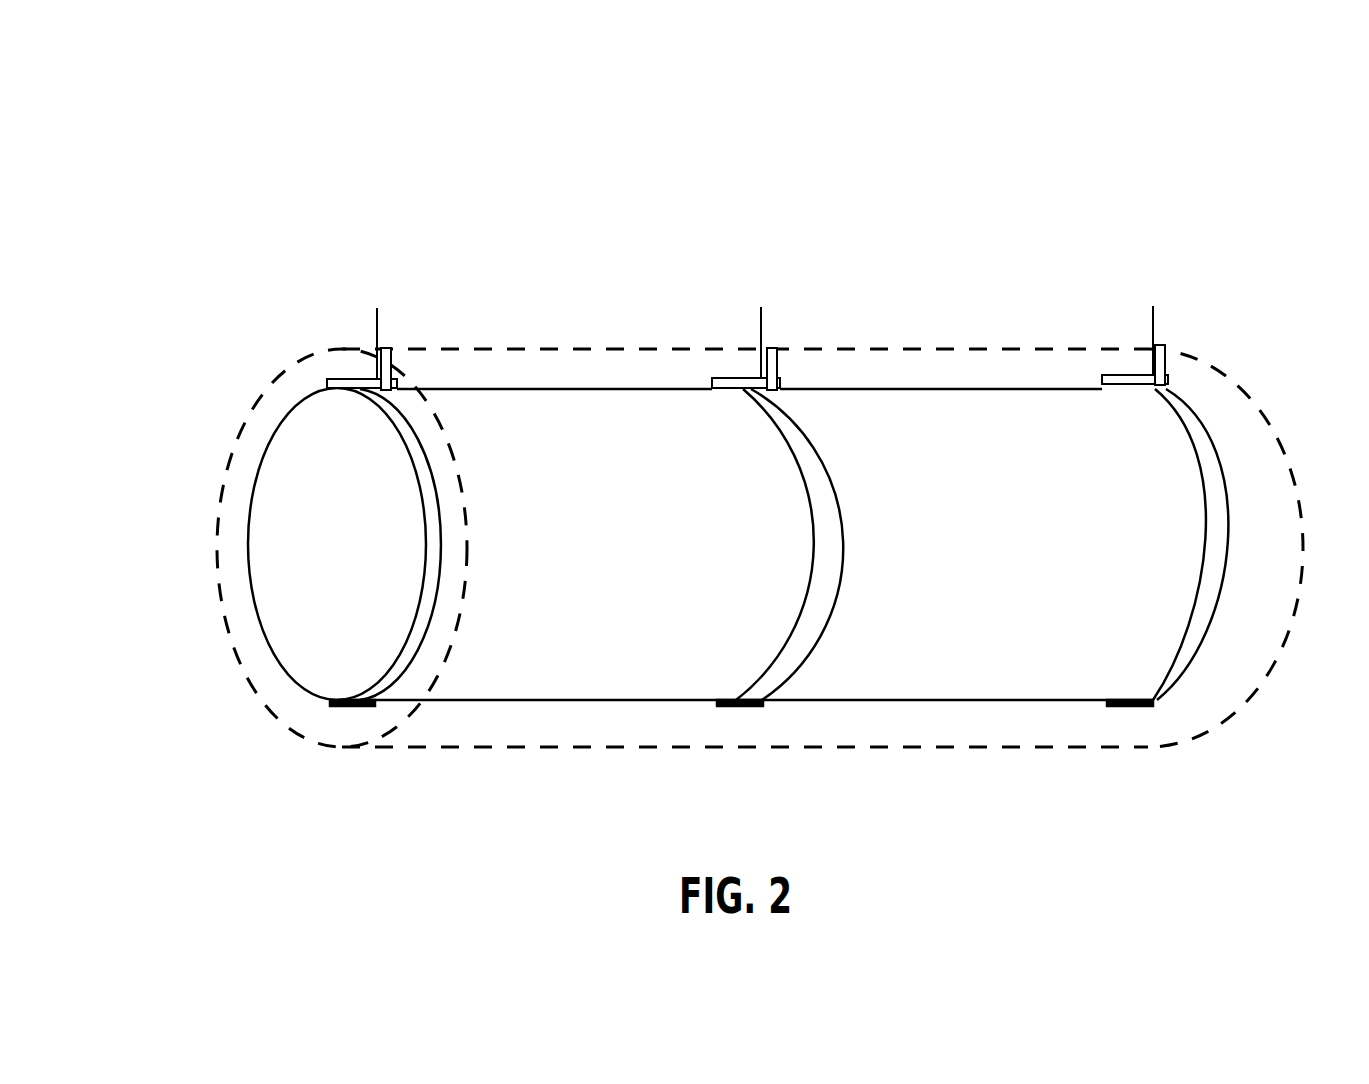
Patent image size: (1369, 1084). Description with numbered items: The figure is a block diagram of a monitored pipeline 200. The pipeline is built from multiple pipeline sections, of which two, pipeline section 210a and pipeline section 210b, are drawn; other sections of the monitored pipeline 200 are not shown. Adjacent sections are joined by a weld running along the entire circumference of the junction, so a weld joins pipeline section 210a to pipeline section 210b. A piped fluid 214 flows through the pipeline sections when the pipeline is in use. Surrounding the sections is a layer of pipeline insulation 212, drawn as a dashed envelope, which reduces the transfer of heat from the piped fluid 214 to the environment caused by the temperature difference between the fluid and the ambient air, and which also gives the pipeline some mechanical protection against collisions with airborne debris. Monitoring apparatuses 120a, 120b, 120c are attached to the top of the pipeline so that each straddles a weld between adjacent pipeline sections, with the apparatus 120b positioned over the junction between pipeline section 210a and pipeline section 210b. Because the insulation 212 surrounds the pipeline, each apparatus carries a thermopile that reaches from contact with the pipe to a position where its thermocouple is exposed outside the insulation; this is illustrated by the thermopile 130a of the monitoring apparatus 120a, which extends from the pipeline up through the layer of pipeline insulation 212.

The monitored pipeline 200 is at (972, 795).
The pipeline section 210a is at (570, 541).
The pipeline section 210b is at (943, 542).
The pipeline insulation 212 is at (315, 718).
The piped fluid 214 is at (312, 547).
The monitoring apparatus 120a is at (353, 379).
The monitoring apparatus 120b is at (737, 375).
The monitoring apparatus 120c is at (1124, 370).
The thermopile 130a is at (397, 350).